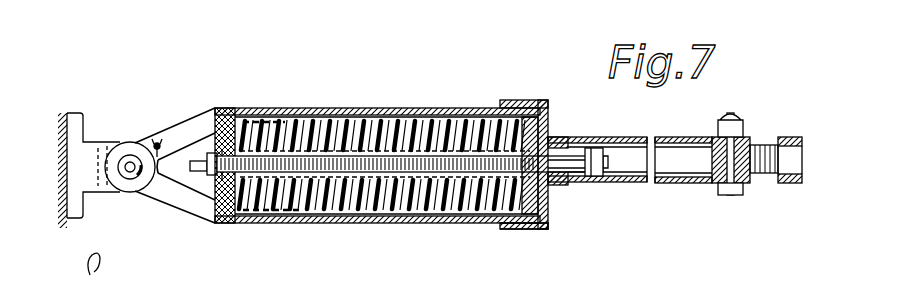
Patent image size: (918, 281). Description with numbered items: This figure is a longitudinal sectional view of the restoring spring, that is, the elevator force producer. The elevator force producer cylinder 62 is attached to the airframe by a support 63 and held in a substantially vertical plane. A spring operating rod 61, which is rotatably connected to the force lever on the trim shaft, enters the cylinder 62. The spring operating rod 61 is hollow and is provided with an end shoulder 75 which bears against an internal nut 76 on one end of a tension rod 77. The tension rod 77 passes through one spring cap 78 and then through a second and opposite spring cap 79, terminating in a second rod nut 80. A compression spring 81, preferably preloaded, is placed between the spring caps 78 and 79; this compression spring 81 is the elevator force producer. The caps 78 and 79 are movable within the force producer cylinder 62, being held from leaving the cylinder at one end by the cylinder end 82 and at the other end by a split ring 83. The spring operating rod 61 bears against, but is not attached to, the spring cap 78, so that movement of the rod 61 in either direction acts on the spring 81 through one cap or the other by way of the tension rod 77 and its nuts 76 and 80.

The spring operating rod 61 is at (645, 186).
The elevator force producer cylinder 62 is at (372, 107).
The support 63 is at (92, 160).
The end shoulder 75 is at (572, 183).
The internal nut 76 is at (600, 180).
The tension rod 77 is at (557, 167).
The spring cap 78 is at (548, 216).
The second spring cap 79 is at (207, 160).
The second rod nut 80 is at (200, 147).
The compression spring 81 is at (290, 120).
The cylinder end 82 is at (219, 150).
The split ring 83 is at (546, 112).